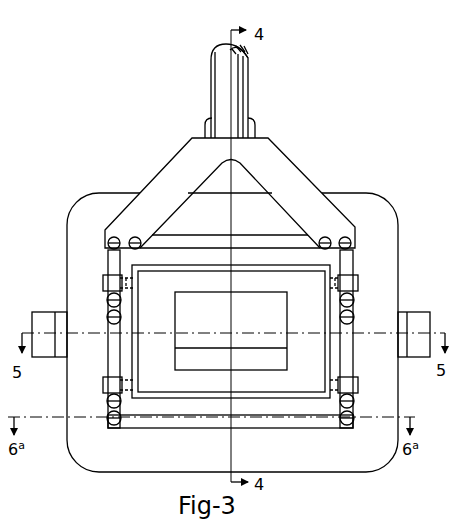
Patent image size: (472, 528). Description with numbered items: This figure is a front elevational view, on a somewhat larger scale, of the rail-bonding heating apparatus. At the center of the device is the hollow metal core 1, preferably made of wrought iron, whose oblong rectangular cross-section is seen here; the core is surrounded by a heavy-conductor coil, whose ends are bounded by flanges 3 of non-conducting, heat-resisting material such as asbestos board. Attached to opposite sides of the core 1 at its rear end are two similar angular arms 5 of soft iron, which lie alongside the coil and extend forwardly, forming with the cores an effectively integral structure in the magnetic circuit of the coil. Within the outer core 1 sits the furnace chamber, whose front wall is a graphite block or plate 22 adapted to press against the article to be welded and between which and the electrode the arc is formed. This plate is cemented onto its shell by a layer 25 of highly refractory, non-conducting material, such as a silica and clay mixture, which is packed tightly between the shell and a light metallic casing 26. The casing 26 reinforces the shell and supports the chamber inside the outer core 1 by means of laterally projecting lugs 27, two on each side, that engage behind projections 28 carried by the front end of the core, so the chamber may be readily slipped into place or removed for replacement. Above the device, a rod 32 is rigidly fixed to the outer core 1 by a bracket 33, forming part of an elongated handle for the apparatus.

The hollow metal core 1 is at (316, 421).
The flanges 3 is at (232, 332).
The angular arms 5 is at (33, 312).
The graphite block or plate 22 is at (231, 331).
The layer of refractory non-conducting material 25 is at (231, 331).
The metallic casing 26 is at (127, 354).
The lugs 27 is at (107, 276).
The projections 28 is at (110, 290).
The rod 32 is at (240, 88).
The bracket 33 is at (292, 168).